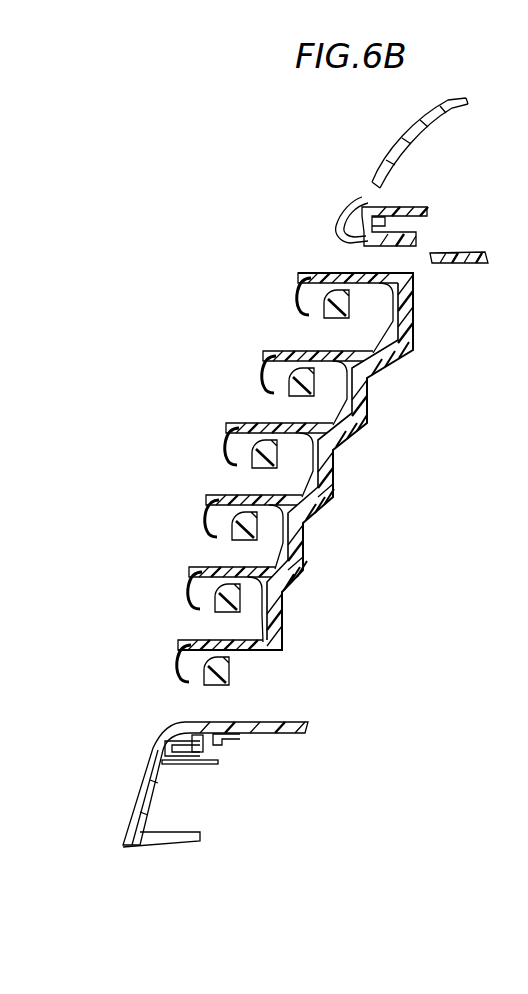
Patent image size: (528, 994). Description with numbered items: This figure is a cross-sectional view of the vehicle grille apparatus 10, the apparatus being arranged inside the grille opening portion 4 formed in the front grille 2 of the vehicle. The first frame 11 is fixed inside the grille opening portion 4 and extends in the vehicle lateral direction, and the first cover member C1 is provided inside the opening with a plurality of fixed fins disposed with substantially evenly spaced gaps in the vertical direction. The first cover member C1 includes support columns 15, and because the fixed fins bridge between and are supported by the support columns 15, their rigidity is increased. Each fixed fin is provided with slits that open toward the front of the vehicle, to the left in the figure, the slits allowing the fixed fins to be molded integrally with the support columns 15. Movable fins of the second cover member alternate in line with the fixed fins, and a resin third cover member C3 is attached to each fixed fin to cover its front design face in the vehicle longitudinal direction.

The vehicle grille apparatus 10 is at (262, 238).
The first frame 11 is at (484, 251).
The support column 15 is at (283, 608).
The front grille 2 is at (150, 776).
The grille opening portion 4 is at (250, 722).
The first cover member C1 is at (415, 277).
The third cover member C3 is at (297, 296).